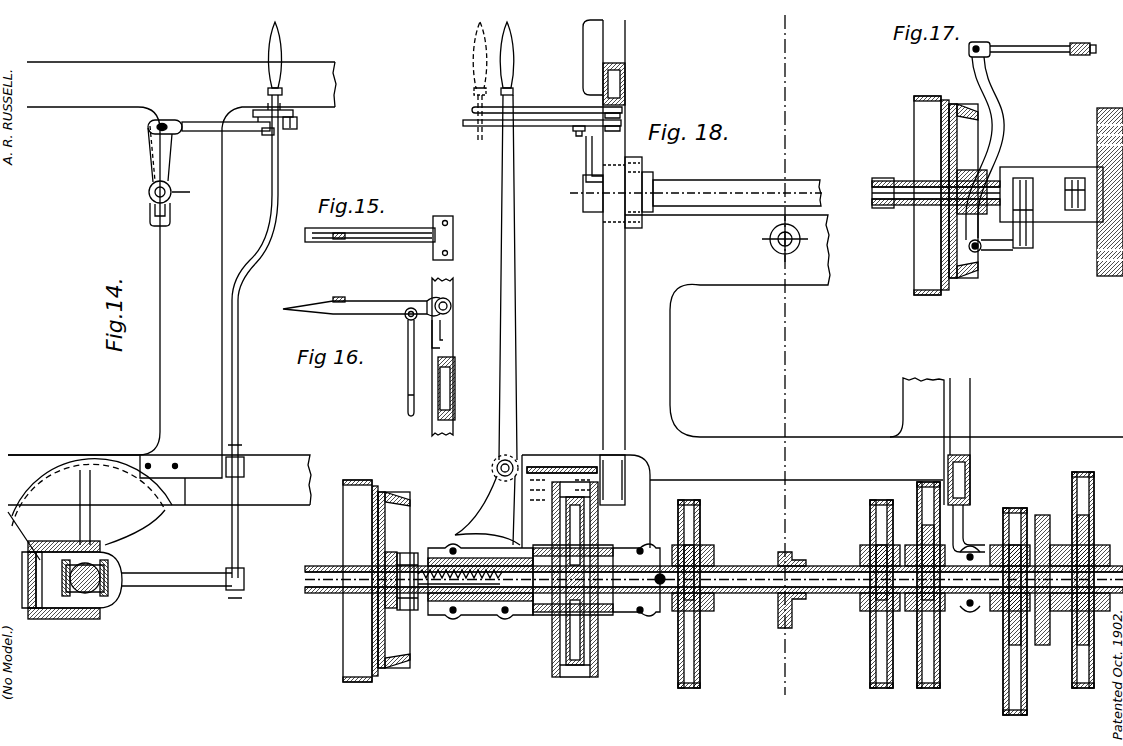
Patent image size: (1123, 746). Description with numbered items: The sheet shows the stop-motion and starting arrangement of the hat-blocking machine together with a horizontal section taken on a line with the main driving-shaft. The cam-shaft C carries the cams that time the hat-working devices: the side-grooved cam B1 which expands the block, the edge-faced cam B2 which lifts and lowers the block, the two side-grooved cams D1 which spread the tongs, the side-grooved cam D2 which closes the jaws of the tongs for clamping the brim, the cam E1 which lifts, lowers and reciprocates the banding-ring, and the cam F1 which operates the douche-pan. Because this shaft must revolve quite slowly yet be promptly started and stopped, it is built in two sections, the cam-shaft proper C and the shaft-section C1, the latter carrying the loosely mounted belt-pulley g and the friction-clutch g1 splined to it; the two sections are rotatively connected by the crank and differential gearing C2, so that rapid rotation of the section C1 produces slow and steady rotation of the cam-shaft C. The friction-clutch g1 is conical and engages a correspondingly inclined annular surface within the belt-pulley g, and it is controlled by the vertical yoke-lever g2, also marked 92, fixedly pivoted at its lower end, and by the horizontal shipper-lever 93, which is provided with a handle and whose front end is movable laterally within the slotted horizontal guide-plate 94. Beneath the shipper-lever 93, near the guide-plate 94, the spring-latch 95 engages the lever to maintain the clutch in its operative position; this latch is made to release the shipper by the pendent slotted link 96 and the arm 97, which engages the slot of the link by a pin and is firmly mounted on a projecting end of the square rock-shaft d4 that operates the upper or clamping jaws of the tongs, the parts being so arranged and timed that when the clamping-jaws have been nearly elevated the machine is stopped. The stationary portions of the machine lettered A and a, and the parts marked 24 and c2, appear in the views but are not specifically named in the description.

In FIG. 14, the crank arm 24 is at (151, 188).
In FIG. 14, the yoke-lever 92 is at (177, 588).
In FIG. 14, the shipper-lever 93 is at (260, 250).
In FIG. 15, the shipper-lever 93 is at (336, 241).
In FIG. 16, the shipper-lever 93 is at (340, 300).
In FIG. 18, the shipper-lever 93 is at (515, 355).
In FIG. 14, the guide-plate 94 is at (265, 108).
In FIG. 15, the guide-plate 94 is at (370, 232).
In FIG. 18, the guide-plate 94 is at (544, 108).
In FIG. 14, the spring-latch 95 is at (283, 130).
In FIG. 16, the spring-latch 95 is at (355, 317).
In FIG. 18, the spring-latch 95 is at (538, 127).
In FIG. 14, the slotted link 96 is at (231, 132).
In FIG. 16, the slotted link 96 is at (402, 362).
In FIG. 18, the slotted link 96 is at (574, 131).
In FIG. 18, the arm 97 is at (581, 159).
In FIG. 14, the clamp shaft c2 is at (85, 590).
In FIG. 14, the frame A is at (172, 283).
In FIG. 18, the frame A is at (853, 262).
In FIG. 18, the frame rail a is at (796, 464).
In FIG. 17, the belt-pulley g is at (931, 195).
In FIG. 18, the belt-pulley g is at (360, 571).
In FIG. 17, the friction-clutch g1 is at (968, 191).
In FIG. 18, the friction-clutch g1 is at (406, 504).
In FIG. 17, the yoke-lever g2 is at (992, 142).
In FIG. 18, the yoke-lever g2 is at (410, 556).
In FIG. 18, the cam-shaft C is at (714, 572).
In FIG. 18, the shaft-section C1 is at (490, 600).
In FIG. 18, the crank and differential gearing C2 is at (596, 588).
In FIG. 18, the side-grooved cams D1 is at (700, 512).
In FIG. 18, the side-grooved cam D2 is at (918, 500).
In FIG. 18, the cam F1 is at (792, 583).
In FIG. 18, the cam E1 is at (991, 610).
In FIG. 18, the side-grooved cam B1 is at (1080, 472).
In FIG. 18, the edge-faced cam B2 is at (1042, 571).
In FIG. 18, the rock-shaft d4 is at (696, 192).